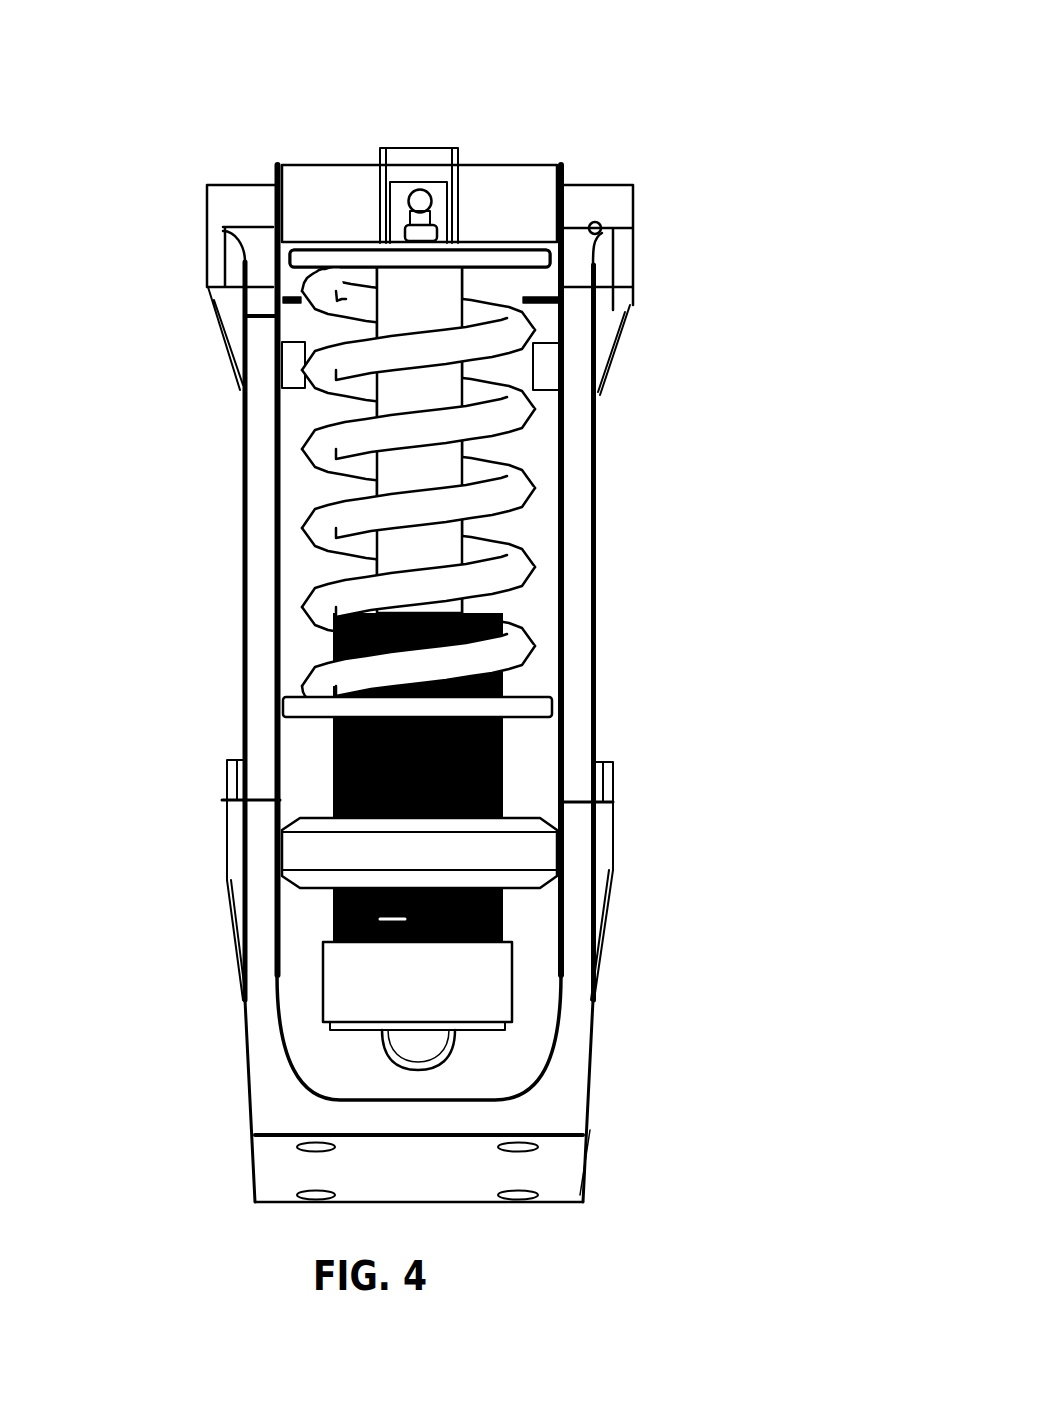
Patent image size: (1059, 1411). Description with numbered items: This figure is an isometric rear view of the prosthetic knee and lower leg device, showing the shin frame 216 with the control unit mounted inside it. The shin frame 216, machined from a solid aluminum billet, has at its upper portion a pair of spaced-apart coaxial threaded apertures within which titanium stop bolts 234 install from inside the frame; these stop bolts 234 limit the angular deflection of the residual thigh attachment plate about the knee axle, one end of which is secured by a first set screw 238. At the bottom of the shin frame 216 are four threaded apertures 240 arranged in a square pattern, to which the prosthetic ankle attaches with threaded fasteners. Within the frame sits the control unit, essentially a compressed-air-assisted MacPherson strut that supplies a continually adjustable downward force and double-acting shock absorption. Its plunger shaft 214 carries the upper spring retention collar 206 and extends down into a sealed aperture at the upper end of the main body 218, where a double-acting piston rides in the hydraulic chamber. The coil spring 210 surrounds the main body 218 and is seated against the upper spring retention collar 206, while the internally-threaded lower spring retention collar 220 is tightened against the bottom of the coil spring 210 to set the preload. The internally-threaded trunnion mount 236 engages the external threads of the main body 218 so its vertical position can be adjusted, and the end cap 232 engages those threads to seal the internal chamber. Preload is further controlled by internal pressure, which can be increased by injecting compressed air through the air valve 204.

The air valve 204 is at (430, 205).
The upper spring retention collar 206 is at (555, 315).
The coil spring 210 is at (518, 572).
The plunger shaft 214 is at (448, 462).
The shin frame 216 is at (258, 657).
The main body 218 is at (340, 782).
The lower spring retention collar 220 is at (527, 712).
The end cap 232 is at (500, 1000).
The titanium stop bolts 234 is at (292, 373).
The trunnion mount 236 is at (521, 859).
The first set screw 238 is at (605, 233).
The threaded apertures 240 is at (677, 1287).